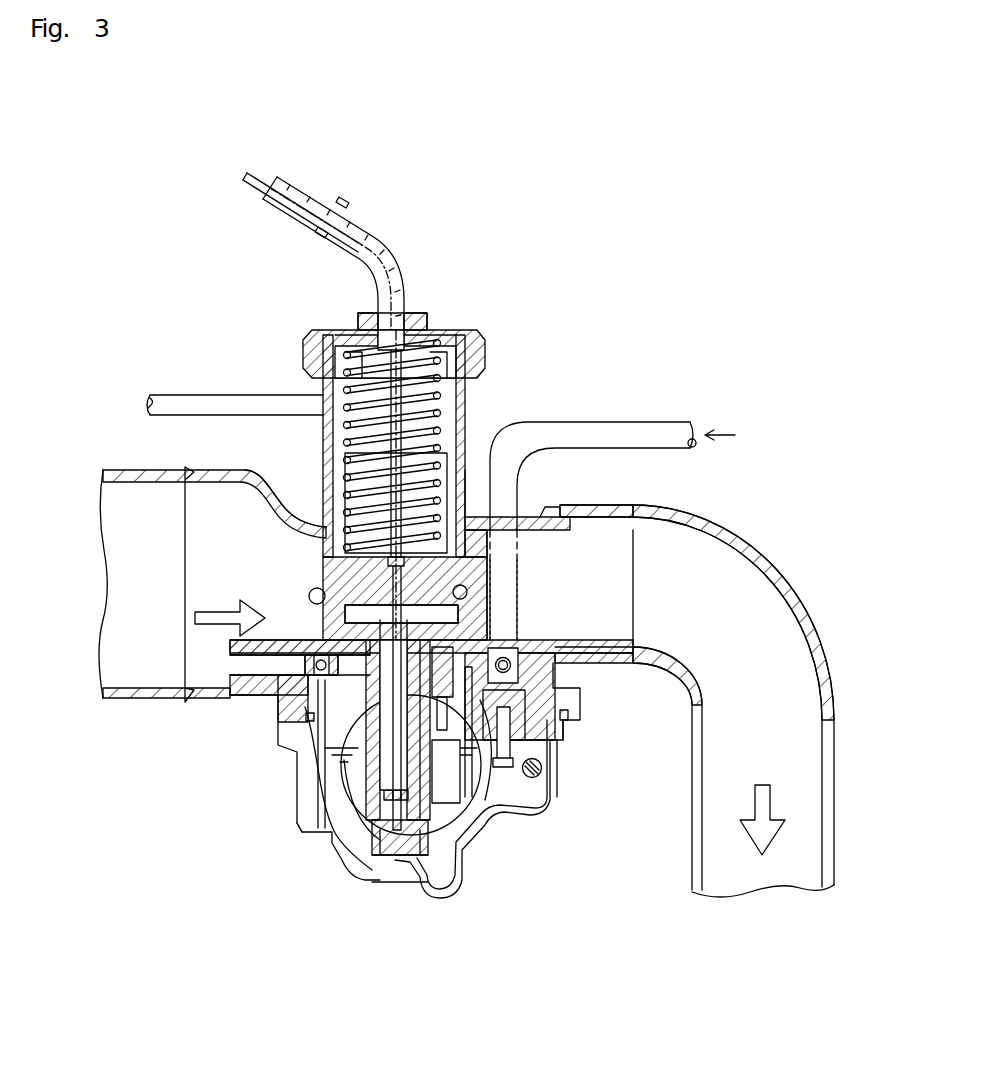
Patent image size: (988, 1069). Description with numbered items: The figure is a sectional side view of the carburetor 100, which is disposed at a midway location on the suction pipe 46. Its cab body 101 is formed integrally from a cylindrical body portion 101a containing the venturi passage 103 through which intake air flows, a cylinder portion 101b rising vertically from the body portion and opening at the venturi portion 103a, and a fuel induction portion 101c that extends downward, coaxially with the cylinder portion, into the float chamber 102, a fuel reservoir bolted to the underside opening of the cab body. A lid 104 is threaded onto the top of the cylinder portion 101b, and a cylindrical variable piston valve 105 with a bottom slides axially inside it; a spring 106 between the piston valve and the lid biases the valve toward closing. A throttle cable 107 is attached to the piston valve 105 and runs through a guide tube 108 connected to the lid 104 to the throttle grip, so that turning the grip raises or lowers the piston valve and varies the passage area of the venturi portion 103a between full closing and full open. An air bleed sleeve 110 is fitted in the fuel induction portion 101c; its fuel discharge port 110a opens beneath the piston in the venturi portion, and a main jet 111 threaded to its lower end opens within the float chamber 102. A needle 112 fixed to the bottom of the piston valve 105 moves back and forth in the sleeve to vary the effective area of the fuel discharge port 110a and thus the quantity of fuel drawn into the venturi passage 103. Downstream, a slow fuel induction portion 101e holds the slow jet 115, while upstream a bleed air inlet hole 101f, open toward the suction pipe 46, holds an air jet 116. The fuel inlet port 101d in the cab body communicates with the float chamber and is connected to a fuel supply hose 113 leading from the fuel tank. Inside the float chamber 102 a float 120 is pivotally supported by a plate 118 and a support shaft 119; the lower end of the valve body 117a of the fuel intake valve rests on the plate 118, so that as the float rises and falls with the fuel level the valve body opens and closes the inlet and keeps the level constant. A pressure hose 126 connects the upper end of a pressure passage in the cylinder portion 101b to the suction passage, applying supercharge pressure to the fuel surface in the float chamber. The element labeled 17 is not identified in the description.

The carburetor 100 is at (566, 294).
The cab body 101 is at (476, 398).
The cylindrical body portion 101a is at (290, 485).
The cylinder portion 101b is at (467, 442).
The fuel induction portion 101c is at (348, 862).
The fuel inlet port 101d is at (532, 653).
The slow fuel induction portion 101e is at (492, 632).
The bleed air inlet hole 101f is at (307, 647).
The float chamber 102 is at (352, 872).
The venturi passage 103 is at (309, 590).
The venturi portion 103a is at (475, 606).
The lid 104 is at (303, 343).
The variable piston valve 105 is at (468, 552).
The spring 106 is at (343, 405).
The throttle cable 107 is at (262, 176).
The guide tube 108 is at (378, 236).
The air bleed sleeve 110 is at (315, 757).
The fuel discharge port 110a is at (345, 587).
The main jet 111 is at (372, 856).
The needle 112 is at (430, 570).
The fuel supply hose 113 is at (614, 450).
The slow jet 115 is at (432, 780).
The air jet 116 is at (277, 705).
The valve body 117a is at (513, 735).
The plate 118 is at (477, 790).
The support shaft 119 is at (548, 775).
The float 120 is at (490, 816).
The pressure hose 126 is at (190, 395).
The suction pipe 46 is at (745, 545).
The mounting boss 17 is at (580, 717).